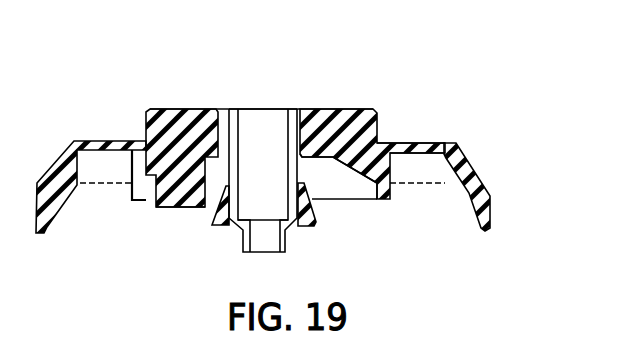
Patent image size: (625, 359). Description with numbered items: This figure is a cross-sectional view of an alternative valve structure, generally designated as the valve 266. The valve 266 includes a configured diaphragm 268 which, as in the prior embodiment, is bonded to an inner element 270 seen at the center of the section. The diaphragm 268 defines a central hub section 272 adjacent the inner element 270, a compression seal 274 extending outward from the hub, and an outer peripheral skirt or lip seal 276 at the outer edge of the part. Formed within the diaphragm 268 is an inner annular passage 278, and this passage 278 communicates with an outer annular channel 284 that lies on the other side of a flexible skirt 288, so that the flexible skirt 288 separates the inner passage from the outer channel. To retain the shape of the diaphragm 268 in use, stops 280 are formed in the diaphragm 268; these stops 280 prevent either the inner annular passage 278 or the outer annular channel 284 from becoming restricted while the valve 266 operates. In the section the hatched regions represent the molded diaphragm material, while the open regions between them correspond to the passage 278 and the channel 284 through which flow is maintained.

The valve 266 is at (270, 71).
The diaphragm 268 is at (205, 93).
The inner element 270 is at (296, 109).
The central hub section 272 is at (365, 109).
The compression seal 274 is at (412, 143).
The outer peripheral skirt or lip seal 276 is at (463, 173).
The inner annular passage 278 is at (338, 202).
The stops 280 is at (193, 205).
The outer annular channel 284 is at (425, 175).
The flexible skirt 288 is at (367, 205).